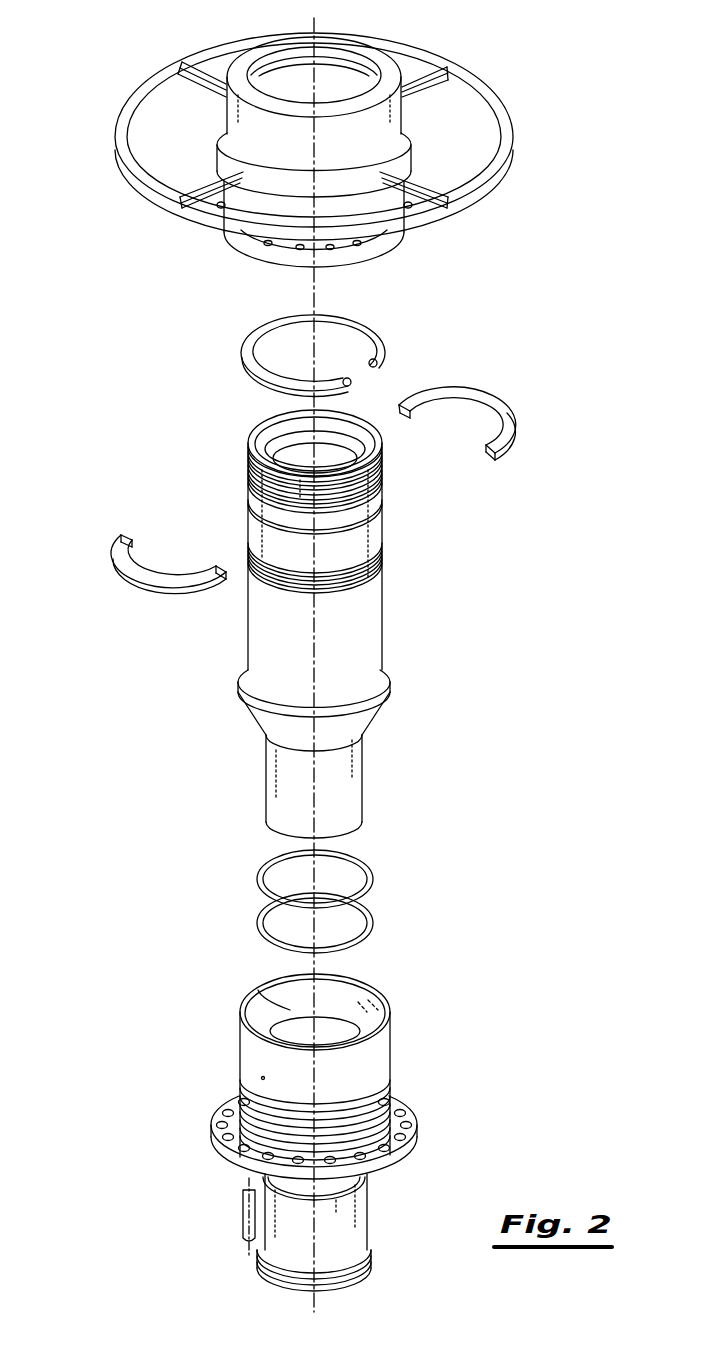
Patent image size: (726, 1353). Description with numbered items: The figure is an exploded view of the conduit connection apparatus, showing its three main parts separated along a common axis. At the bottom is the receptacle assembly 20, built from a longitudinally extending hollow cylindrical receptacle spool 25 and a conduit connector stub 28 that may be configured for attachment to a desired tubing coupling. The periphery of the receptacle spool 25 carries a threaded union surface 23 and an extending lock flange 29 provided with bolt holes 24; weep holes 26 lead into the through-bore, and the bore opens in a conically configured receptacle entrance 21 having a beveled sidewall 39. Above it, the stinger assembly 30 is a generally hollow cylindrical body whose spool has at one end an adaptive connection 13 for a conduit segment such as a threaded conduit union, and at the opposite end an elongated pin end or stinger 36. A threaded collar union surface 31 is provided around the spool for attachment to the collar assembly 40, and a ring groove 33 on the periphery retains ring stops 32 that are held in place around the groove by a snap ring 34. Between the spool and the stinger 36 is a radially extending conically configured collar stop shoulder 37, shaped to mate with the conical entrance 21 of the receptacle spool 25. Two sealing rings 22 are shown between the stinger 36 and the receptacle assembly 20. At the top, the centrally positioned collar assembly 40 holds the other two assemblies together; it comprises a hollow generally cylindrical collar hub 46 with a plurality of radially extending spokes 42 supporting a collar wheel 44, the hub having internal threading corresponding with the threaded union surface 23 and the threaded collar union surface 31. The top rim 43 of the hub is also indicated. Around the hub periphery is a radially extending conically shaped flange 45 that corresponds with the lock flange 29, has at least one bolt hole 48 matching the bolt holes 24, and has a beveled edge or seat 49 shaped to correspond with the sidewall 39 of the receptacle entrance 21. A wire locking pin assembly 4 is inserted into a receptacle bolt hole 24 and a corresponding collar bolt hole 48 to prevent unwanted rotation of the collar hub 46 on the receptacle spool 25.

The wire locking pin assembly 4 is at (238, 1213).
The adaptive connection 13 is at (247, 455).
The receptacle assembly 20 is at (315, 1052).
The receptacle entrance 21 is at (330, 1032).
The O-ring seals 22 is at (257, 880).
The threaded union surface 23 is at (388, 1083).
The bolt holes 24 is at (316, 1144).
The receptacle spool 25 is at (357, 1060).
The weep holes 26 is at (263, 1078).
The conduit connector stub 28 is at (373, 1250).
The lock flange 29 is at (210, 1140).
The stinger assembly 30 is at (310, 534).
The threaded collar union surface 31 is at (245, 547).
The retaining ring stops 32 is at (498, 404).
The ring groove 33 is at (355, 522).
The snap ring 34 is at (245, 348).
The stinger 36 is at (358, 790).
The collar stop shoulder 37 is at (247, 677).
The beveled sidewall 39 is at (293, 1013).
The collar assembly 40 is at (344, 108).
The spokes 42 is at (500, 176).
The hub top rim 43 is at (360, 43).
The collar wheel 44 is at (120, 147).
The conically shaped flange 45 is at (387, 247).
The collar hub 46 is at (410, 115).
The bolt hole 48 is at (338, 248).
The beveled edge or seat 49 is at (343, 723).